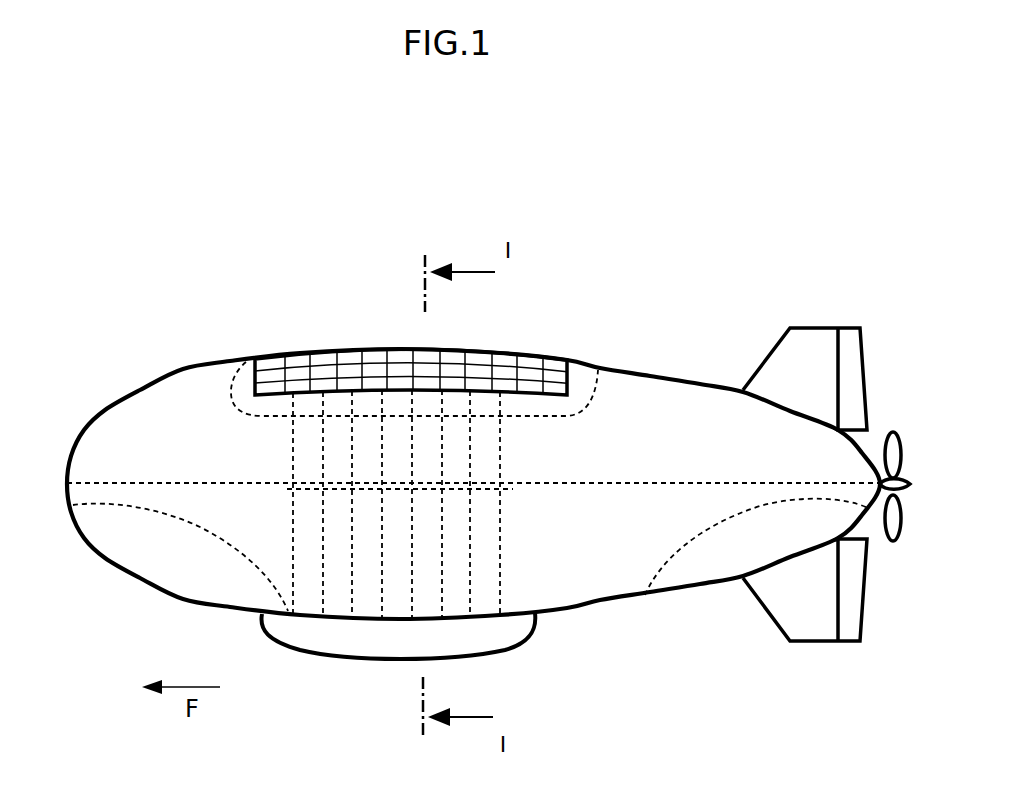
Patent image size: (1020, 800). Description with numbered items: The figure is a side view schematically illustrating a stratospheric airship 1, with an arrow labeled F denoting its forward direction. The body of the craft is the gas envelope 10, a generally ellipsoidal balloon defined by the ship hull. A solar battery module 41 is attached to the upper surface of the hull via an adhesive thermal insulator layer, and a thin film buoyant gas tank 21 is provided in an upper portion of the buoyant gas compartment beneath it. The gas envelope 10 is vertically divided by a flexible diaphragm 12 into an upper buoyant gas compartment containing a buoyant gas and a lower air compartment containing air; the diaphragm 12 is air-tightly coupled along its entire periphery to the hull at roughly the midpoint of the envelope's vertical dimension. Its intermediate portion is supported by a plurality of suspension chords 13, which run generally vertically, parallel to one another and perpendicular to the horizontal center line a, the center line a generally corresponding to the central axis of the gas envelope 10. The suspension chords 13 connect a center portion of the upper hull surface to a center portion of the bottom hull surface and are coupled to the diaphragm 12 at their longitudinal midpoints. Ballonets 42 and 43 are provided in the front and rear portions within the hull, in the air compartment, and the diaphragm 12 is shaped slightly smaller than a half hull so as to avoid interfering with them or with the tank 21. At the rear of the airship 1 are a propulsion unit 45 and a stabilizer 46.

The stratospheric airship 1 is at (594, 275).
The gas envelope 10 is at (182, 358).
The diaphragm 12 is at (668, 481).
The suspension chords 13 is at (293, 447).
The thin film buoyant gas tank 21 is at (600, 370).
The solar battery module 41 is at (325, 366).
The ballonet 42 is at (150, 544).
The ballonet 43 is at (700, 566).
The propulsion unit 45 is at (900, 521).
The stabilizer 46 is at (823, 346).
The center line a is at (752, 483).